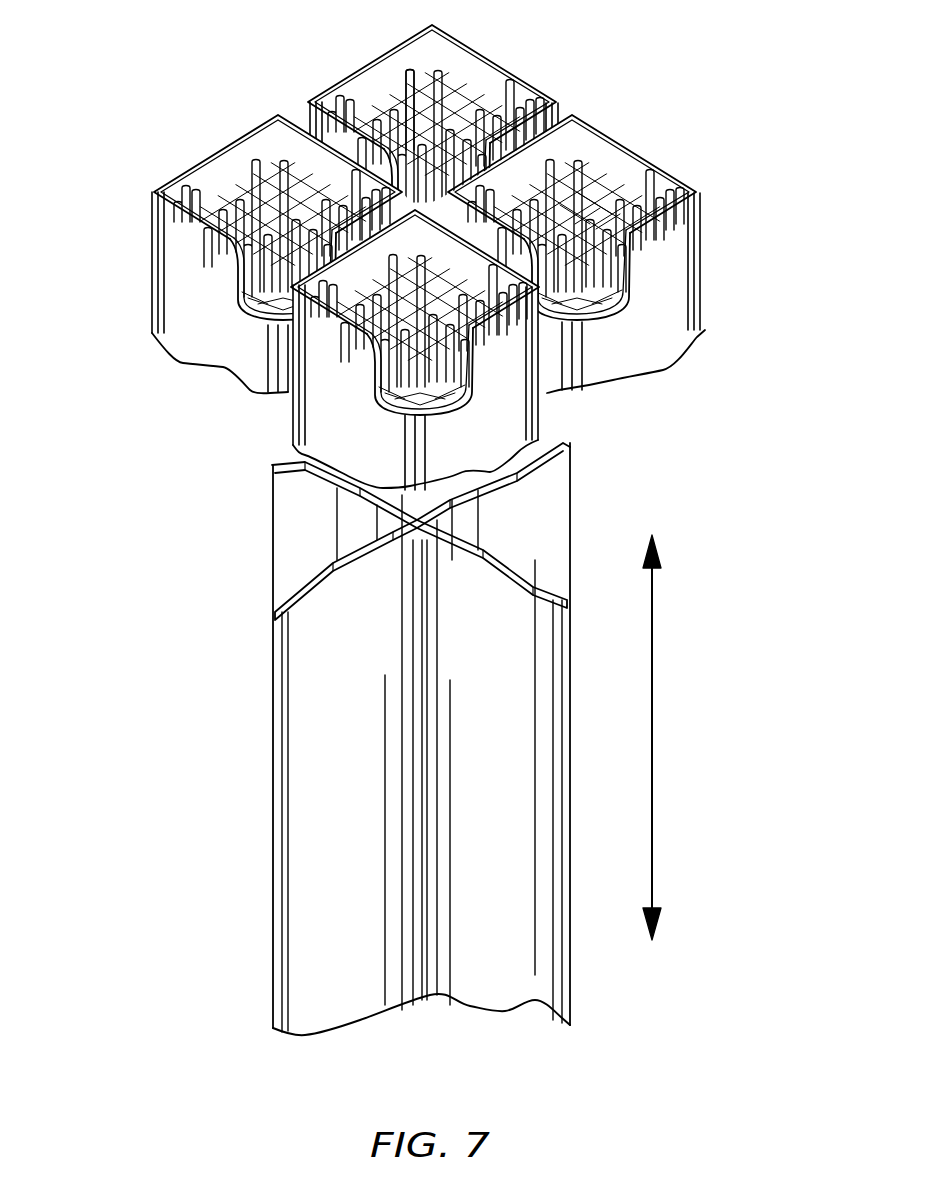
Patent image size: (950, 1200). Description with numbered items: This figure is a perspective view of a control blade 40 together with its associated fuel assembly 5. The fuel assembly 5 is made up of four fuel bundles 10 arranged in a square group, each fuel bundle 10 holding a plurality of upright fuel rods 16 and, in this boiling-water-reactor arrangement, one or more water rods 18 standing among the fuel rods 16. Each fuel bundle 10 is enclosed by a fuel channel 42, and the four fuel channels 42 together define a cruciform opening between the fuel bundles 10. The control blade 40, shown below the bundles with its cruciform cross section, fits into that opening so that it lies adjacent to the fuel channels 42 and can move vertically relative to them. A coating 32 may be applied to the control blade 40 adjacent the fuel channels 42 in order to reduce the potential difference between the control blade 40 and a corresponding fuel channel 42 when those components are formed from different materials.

The fuel assembly 5 is at (128, 236).
The fuel bundle 10 is at (548, 91).
The fuel rod 16 is at (403, 77).
The water rod 18 is at (593, 213).
The coating 32 is at (662, 282).
The control blade 40 is at (560, 987).
The fuel channel 42 is at (322, 410).